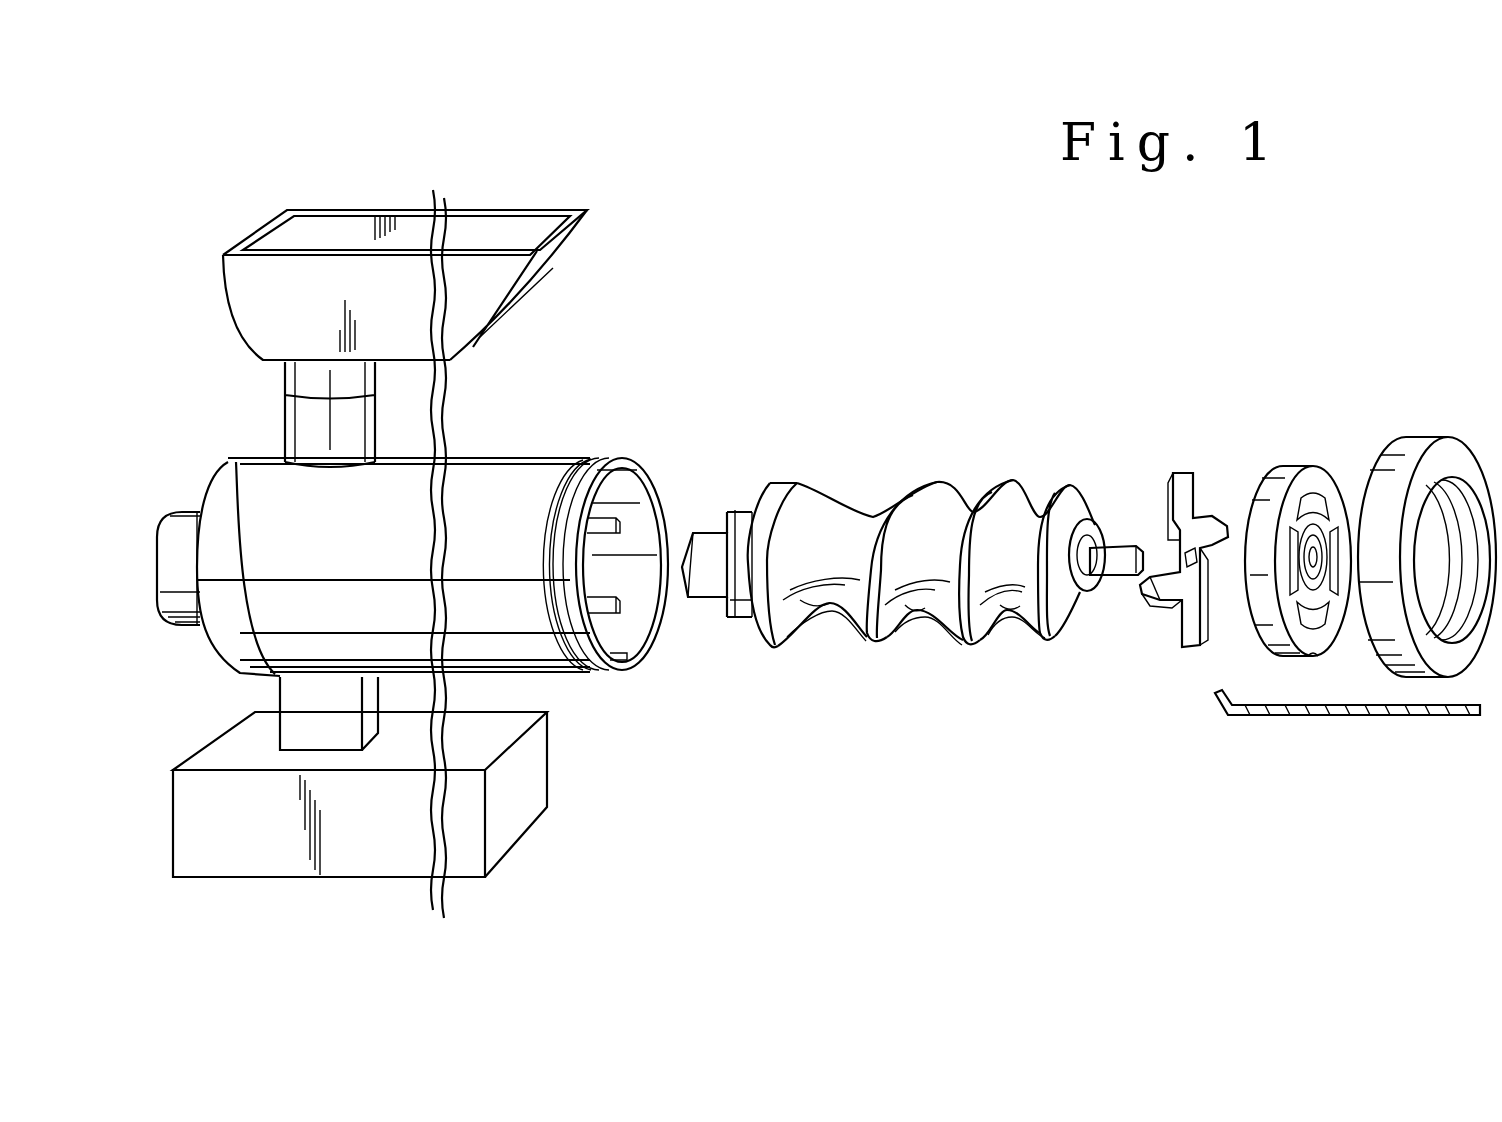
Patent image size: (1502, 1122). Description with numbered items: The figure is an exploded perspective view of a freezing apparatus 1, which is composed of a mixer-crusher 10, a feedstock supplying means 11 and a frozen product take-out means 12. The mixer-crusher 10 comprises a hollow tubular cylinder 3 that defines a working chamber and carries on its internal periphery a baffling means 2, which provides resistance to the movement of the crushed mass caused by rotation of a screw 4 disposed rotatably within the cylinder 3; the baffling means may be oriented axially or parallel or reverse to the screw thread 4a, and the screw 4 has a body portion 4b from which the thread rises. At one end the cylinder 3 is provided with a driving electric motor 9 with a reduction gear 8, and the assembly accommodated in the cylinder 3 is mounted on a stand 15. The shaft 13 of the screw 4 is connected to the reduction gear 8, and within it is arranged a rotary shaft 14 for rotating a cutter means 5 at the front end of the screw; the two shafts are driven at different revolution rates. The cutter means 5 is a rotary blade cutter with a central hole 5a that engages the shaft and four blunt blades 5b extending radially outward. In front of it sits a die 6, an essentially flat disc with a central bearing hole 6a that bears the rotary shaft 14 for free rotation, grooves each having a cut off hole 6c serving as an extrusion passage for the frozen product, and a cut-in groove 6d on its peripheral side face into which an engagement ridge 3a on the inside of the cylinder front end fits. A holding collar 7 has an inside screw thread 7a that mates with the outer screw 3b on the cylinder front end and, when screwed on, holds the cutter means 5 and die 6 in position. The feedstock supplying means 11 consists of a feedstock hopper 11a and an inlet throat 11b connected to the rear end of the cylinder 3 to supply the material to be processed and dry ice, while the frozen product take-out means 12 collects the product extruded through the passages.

The freezing apparatus 1 is at (814, 250).
The baffling means 2 is at (615, 520).
The cylinder 3 is at (530, 450).
The engagement ridge 3a is at (620, 657).
The outer screw 3b is at (582, 660).
The screw 4 is at (935, 470).
The screw thread 4a is at (880, 640).
The screw shaft 4b is at (843, 583).
The cutter means 5 is at (1187, 475).
The central hole 5a is at (1190, 558).
The blunt blades 5b is at (1158, 597).
The die 6 is at (1273, 467).
The central bearing hole 6a is at (1320, 567).
The cut off hole 6c is at (1313, 497).
The cut-in groove 6d is at (1310, 653).
The holding collar 7 is at (1398, 455).
The inside screw thread 7a is at (1456, 485).
The reduction gear 8 is at (243, 472).
The driving electric motor 9 is at (187, 527).
The mixer-crusher 10 is at (1473, 319).
The feedstock supplying means 11 is at (387, 207).
The feedstock hopper 11a is at (313, 230).
The inlet throat 11b is at (362, 415).
The frozen product take-out means 12 is at (1243, 720).
The shaft 13 is at (707, 587).
The rotary shaft 14 is at (1113, 567).
The stand 15 is at (515, 812).